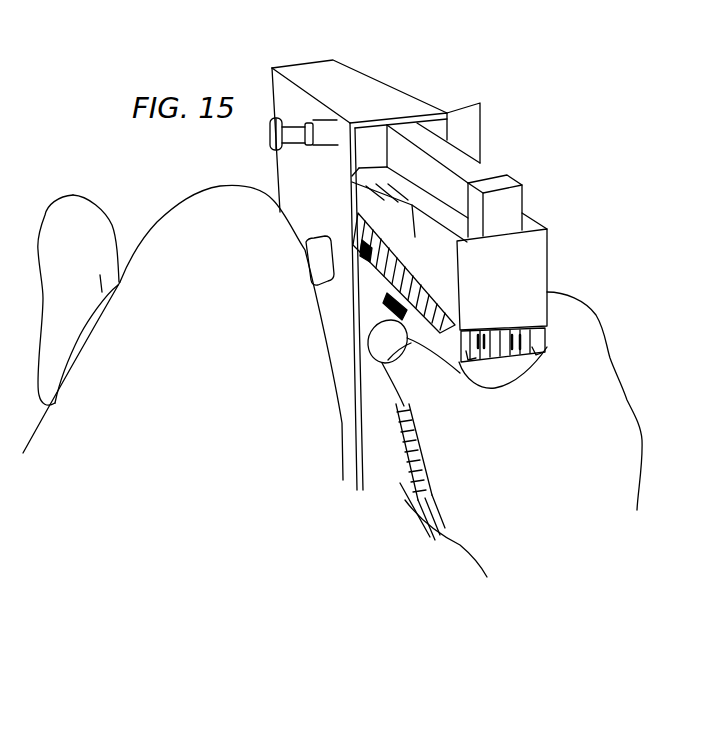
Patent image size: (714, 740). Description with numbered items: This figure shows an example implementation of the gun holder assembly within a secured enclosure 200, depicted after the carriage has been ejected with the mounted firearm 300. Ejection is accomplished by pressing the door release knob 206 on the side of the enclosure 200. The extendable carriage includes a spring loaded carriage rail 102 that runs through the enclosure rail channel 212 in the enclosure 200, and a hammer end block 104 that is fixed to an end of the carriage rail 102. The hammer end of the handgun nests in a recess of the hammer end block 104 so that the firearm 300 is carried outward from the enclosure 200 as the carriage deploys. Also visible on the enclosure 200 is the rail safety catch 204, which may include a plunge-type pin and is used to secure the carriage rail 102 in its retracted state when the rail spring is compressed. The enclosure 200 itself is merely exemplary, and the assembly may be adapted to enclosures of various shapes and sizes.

The enclosure 200 is at (413, 88).
The enclosure rail channel 212 is at (353, 177).
The rail safety catch 204 is at (271, 128).
The door release knob 206 is at (310, 237).
The carriage rail 102 is at (473, 125).
The hammer end block 104 is at (523, 258).
The firearm 300 is at (402, 515).